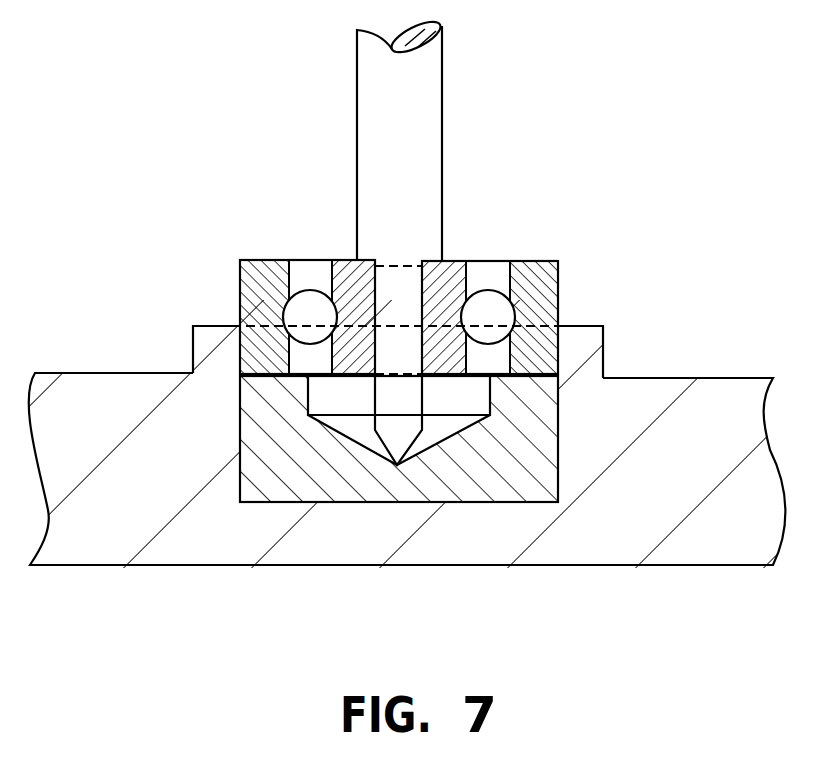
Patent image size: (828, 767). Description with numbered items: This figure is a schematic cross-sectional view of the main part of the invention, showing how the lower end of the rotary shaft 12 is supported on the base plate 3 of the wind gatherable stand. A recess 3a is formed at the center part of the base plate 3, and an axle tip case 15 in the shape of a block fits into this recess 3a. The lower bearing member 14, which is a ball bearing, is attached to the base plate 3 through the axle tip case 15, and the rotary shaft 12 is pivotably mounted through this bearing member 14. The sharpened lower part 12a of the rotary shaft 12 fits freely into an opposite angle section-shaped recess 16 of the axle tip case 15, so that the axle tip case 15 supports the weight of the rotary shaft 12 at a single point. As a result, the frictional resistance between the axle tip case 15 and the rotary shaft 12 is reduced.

The base plate 3 is at (720, 410).
The recess 3a is at (548, 498).
The rotary shaft 12 is at (433, 133).
The sharpened lower part 12a is at (400, 445).
The lower bearing member 14 is at (556, 305).
The axle tip case 15 is at (510, 494).
The opposite angle section-shaped recess 16 is at (365, 442).